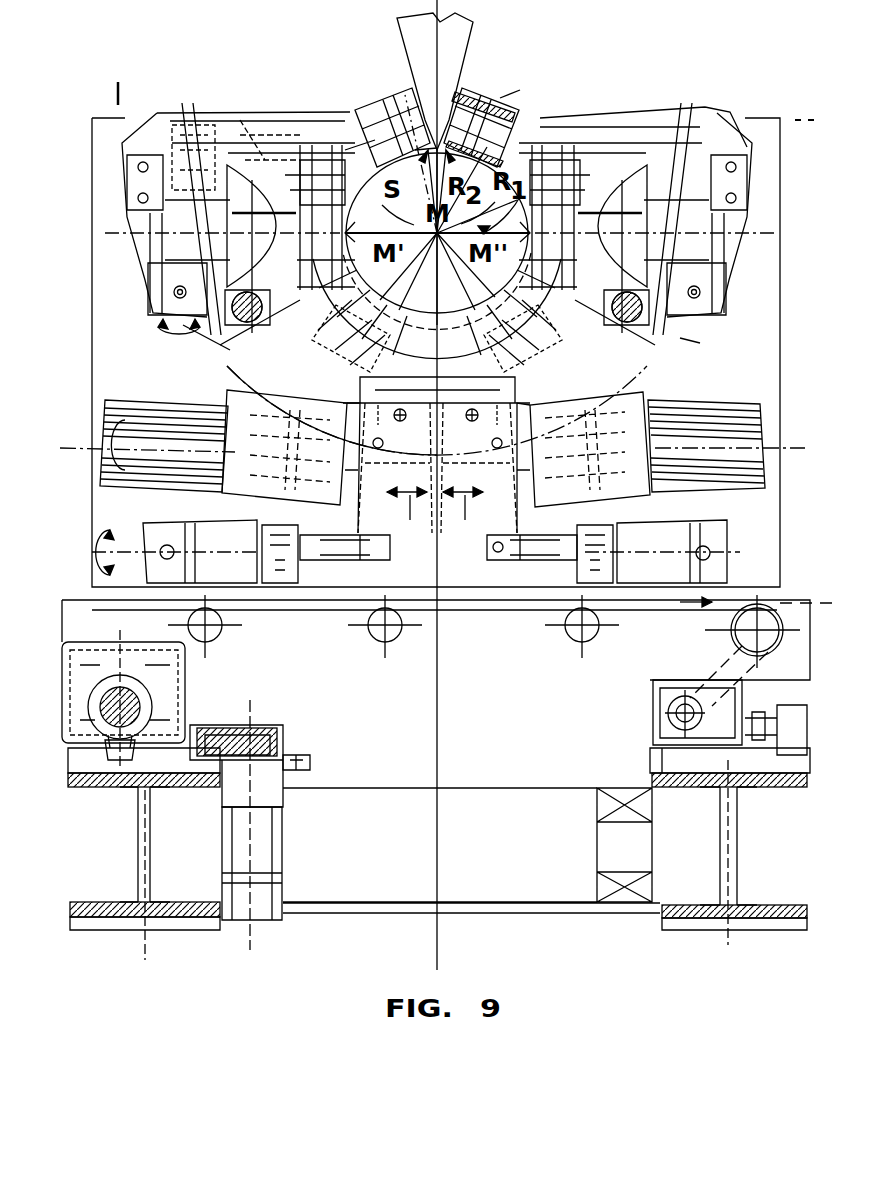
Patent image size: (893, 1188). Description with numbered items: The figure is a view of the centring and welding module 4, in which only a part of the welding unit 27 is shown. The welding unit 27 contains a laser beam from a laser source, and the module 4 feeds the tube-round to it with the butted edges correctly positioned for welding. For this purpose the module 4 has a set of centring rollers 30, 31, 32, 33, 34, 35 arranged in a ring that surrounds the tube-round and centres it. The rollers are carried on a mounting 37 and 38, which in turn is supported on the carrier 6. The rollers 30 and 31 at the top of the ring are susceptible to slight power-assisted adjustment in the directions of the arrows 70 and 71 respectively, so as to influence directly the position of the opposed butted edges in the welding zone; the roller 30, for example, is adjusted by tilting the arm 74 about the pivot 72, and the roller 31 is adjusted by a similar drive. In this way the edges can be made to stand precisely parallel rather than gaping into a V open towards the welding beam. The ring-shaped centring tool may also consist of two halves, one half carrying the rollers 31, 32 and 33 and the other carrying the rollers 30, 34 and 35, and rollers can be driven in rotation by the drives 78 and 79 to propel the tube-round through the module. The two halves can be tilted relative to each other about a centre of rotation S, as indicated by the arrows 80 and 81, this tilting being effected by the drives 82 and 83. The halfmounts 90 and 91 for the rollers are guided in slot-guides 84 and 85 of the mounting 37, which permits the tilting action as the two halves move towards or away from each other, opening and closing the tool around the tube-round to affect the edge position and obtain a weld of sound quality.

The centring and welding module 4 is at (76, 211).
The mounting 37 is at (110, 306).
The pivot 72 is at (168, 128).
The arm 74 is at (260, 122).
The centring roller 30 is at (355, 125).
The arrow 70 is at (398, 102).
The welding unit 27 is at (462, 50).
The centring roller 31 is at (470, 105).
The arrow 71 is at (510, 95).
The centring roller 32 is at (590, 150).
The centring roller 35 is at (434, 246).
The centring roller 34 is at (340, 336).
The centring roller 33 is at (536, 336).
The slot-guide 84 is at (296, 426).
The slot-guide 85 is at (589, 430).
The drive 79 is at (130, 420).
The halfmount 90 is at (232, 388).
The halfmount 91 is at (645, 372).
The drive 78 is at (722, 415).
The drive 82 is at (146, 527).
The drive 83 is at (725, 500).
The arrow 80 is at (411, 518).
The arrow 81 is at (461, 518).
The mounting 38 is at (175, 684).
The carrier 6 is at (100, 778).